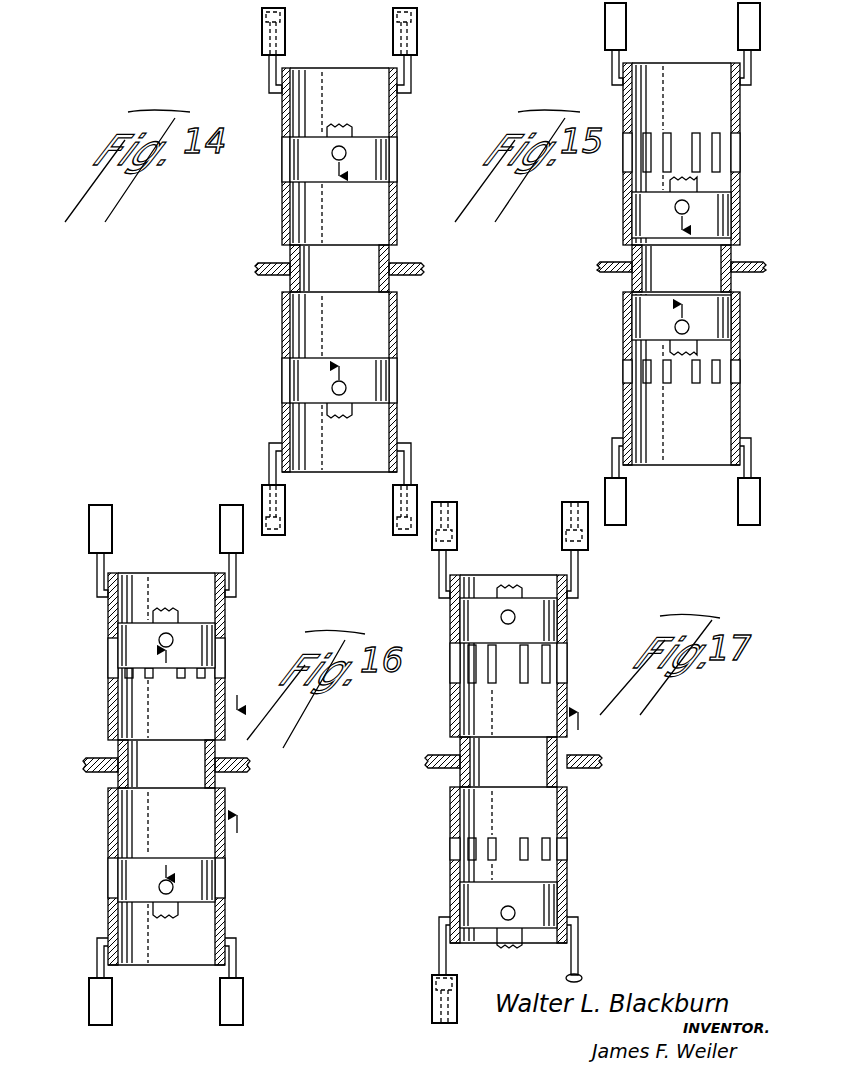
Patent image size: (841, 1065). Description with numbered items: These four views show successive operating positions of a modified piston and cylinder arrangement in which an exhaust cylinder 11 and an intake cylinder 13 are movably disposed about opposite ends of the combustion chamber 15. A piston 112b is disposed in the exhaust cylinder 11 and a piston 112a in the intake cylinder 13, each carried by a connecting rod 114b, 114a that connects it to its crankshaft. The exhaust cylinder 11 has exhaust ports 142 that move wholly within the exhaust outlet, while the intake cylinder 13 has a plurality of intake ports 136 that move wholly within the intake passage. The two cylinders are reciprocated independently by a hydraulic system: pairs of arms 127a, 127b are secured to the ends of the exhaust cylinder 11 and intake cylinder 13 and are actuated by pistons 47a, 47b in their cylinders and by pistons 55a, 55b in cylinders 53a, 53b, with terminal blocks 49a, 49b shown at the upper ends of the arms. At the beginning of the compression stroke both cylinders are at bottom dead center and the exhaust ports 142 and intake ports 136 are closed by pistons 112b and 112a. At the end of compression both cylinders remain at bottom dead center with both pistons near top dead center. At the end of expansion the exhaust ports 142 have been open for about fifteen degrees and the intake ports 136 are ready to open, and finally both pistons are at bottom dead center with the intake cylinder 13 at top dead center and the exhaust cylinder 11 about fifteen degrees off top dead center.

In FIG. 14, the exhaust cylinder 11 is at (398, 232).
In FIG. 15, the exhaust cylinder 11 is at (740, 200).
In FIG. 16, the exhaust cylinder 11 is at (108, 712).
In FIG. 17, the exhaust cylinder 11 is at (450, 703).
In FIG. 14, the intake cylinder 13 is at (400, 307).
In FIG. 15, the intake cylinder 13 is at (740, 405).
In FIG. 16, the intake cylinder 13 is at (108, 817).
In FIG. 17, the intake cylinder 13 is at (450, 803).
In FIG. 14, the combustion chamber 15 is at (288, 282).
In FIG. 15, the combustion chamber 15 is at (736, 280).
In FIG. 16, the combustion chamber 15 is at (110, 775).
In FIG. 17, the combustion chamber 15 is at (445, 755).
In FIG. 14, the piston 47a is at (262, 16).
In FIG. 17, the piston 47a is at (457, 534).
In FIG. 14, the piston 47b is at (417, 16).
In FIG. 17, the piston 47b is at (562, 542).
In FIG. 14, the upper terminal 49a is at (262, 40).
In FIG. 15, the upper terminal 49a is at (605, 30).
In FIG. 16, the upper terminal 49a is at (112, 526).
In FIG. 17, the upper terminal 49a is at (457, 505).
In FIG. 14, the upper terminal 49b is at (418, 42).
In FIG. 15, the upper terminal 49b is at (738, 30).
In FIG. 16, the upper terminal 49b is at (222, 512).
In FIG. 17, the upper terminal 49b is at (562, 512).
In FIG. 14, the cylinder 53a is at (268, 490).
In FIG. 15, the cylinder 53a is at (626, 490).
In FIG. 16, the cylinder 53a is at (112, 988).
In FIG. 17, the cylinder 53a is at (440, 1000).
In FIG. 14, the cylinder 53b is at (418, 490).
In FIG. 15, the cylinder 53b is at (738, 500).
In FIG. 16, the cylinder 53b is at (220, 1012).
In FIG. 14, the piston 55a is at (285, 524).
In FIG. 17, the piston 55a is at (432, 978).
In FIG. 14, the piston 55b is at (392, 520).
In FIG. 14, the piston 112a is at (333, 357).
In FIG. 15, the piston 112a is at (645, 325).
In FIG. 16, the piston 112a is at (135, 890).
In FIG. 17, the piston 112a is at (472, 895).
In FIG. 14, the piston 112b is at (330, 172).
In FIG. 15, the piston 112b is at (645, 220).
In FIG. 16, the piston 112b is at (135, 645).
In FIG. 17, the piston 112b is at (472, 617).
In FIG. 14, the connecting rod 114a is at (350, 415).
In FIG. 14, the connecting rod 114b is at (340, 125).
In FIG. 14, the arms 127a is at (268, 78).
In FIG. 15, the arms 127a is at (610, 65).
In FIG. 16, the arms 127a is at (95, 576).
In FIG. 17, the arms 127a is at (438, 578).
In FIG. 14, the arms 127b is at (407, 74).
In FIG. 15, the arms 127b is at (753, 462).
In FIG. 16, the arms 127b is at (236, 580).
In FIG. 17, the arms 127b is at (578, 567).
In FIG. 14, the intake ports 136 is at (282, 372).
In FIG. 15, the intake ports 136 is at (623, 372).
In FIG. 16, the intake ports 136 is at (108, 866).
In FIG. 17, the intake ports 136 is at (450, 845).
In FIG. 14, the exhaust ports 142 is at (282, 168).
In FIG. 15, the exhaust ports 142 is at (623, 163).
In FIG. 16, the exhaust ports 142 is at (108, 660).
In FIG. 17, the exhaust ports 142 is at (450, 672).